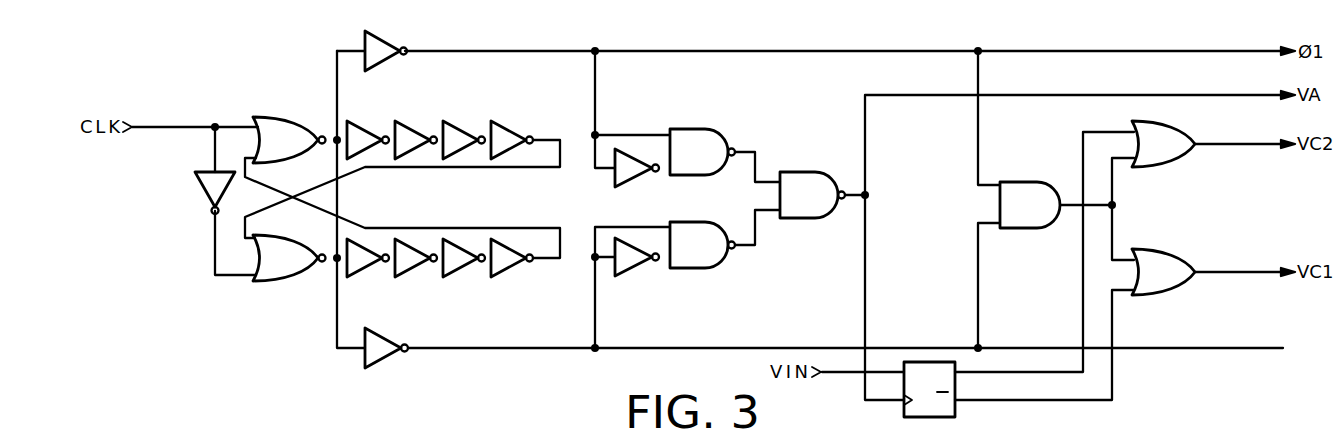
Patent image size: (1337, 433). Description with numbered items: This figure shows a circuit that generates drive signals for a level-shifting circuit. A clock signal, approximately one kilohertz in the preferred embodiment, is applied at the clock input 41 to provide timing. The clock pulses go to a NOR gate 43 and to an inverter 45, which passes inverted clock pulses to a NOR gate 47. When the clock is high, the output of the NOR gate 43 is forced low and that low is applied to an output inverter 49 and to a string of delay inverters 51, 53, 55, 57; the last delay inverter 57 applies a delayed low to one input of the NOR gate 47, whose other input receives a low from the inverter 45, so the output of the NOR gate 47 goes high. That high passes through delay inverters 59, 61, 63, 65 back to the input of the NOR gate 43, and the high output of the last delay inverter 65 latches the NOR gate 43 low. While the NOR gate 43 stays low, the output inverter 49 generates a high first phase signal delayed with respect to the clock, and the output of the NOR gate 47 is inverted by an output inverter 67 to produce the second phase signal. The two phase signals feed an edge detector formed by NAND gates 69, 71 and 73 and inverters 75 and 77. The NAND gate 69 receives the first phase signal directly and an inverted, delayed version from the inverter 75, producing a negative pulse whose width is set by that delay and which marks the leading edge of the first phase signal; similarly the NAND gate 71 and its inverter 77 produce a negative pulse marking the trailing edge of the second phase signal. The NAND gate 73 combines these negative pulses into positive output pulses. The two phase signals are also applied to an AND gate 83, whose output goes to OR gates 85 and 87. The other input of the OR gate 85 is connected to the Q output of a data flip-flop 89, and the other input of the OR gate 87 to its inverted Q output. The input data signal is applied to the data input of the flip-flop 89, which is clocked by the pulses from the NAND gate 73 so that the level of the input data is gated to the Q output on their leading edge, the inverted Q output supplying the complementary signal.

The clock signal input 41 is at (177, 127).
The NOR gate 43 is at (284, 117).
The inverter 45 is at (207, 193).
The NOR gate 47 is at (283, 281).
The output inverter 49 is at (387, 64).
The delay inverter 51 is at (362, 121).
The delay inverter 53 is at (410, 121).
The delay inverter 55 is at (458, 121).
The last delay inverter 57 is at (506, 121).
The delay inverter 59 is at (361, 277).
The delay inverter 61 is at (409, 277).
The delay inverter 63 is at (457, 277).
The last delay inverter 65 is at (505, 277).
The output inverter 67 is at (388, 361).
The NAND gate 69 is at (690, 129).
The NAND gate 71 is at (690, 222).
The NAND gate 73 is at (800, 218).
The inverter 75 is at (632, 181).
The inverter 77 is at (632, 270).
The AND gate 83 is at (1012, 228).
The OR gate 85 is at (1152, 167).
The OR gate 87 is at (1152, 295).
The data flip-flop 89 is at (955, 386).